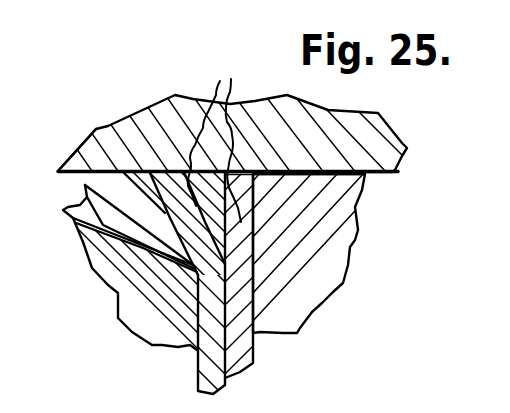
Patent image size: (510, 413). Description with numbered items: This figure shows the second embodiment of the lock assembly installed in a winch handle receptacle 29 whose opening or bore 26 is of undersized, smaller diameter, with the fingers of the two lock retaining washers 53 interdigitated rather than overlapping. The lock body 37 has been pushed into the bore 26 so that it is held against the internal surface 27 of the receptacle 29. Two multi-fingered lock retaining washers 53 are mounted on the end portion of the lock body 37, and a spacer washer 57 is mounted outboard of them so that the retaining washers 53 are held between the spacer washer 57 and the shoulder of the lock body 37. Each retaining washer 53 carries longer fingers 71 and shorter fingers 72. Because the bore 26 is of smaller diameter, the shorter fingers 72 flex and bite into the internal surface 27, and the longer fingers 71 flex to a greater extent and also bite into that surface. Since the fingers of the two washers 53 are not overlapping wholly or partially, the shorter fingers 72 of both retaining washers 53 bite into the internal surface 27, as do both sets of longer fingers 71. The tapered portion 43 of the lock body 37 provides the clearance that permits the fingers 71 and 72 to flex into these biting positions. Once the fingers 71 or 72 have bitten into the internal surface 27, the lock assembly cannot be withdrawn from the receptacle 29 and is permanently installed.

The bore 26 is at (380, 172).
The internal surface 27 is at (67, 178).
The winch handle receptacle 29 is at (193, 99).
The lock body 37 is at (120, 302).
The tapered portion 43 is at (74, 222).
The multi-fingered lock retaining washer 53 is at (255, 352).
The spacer washer 57 is at (333, 245).
The longer fingers 71 is at (124, 172).
The shorter fingers 72 is at (225, 142).